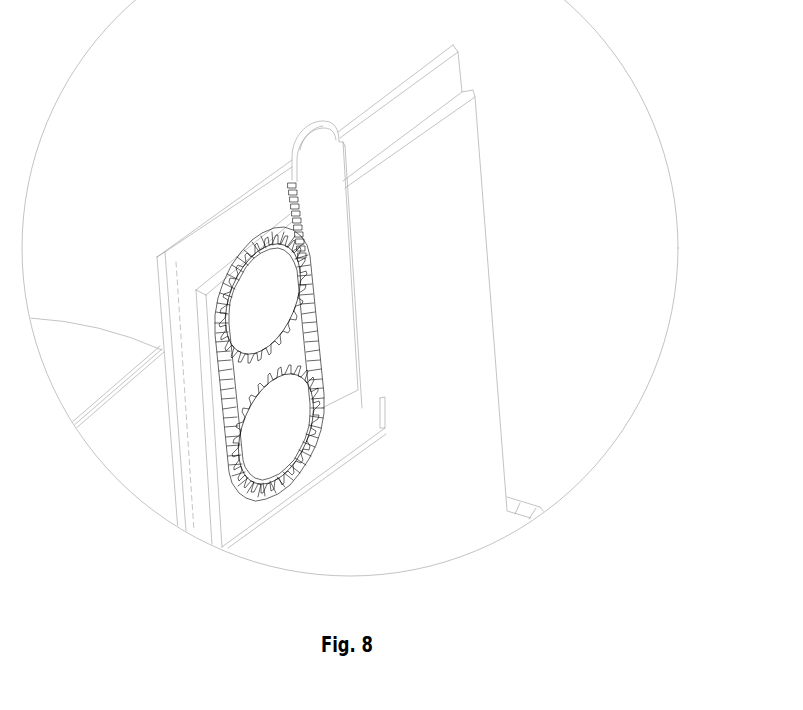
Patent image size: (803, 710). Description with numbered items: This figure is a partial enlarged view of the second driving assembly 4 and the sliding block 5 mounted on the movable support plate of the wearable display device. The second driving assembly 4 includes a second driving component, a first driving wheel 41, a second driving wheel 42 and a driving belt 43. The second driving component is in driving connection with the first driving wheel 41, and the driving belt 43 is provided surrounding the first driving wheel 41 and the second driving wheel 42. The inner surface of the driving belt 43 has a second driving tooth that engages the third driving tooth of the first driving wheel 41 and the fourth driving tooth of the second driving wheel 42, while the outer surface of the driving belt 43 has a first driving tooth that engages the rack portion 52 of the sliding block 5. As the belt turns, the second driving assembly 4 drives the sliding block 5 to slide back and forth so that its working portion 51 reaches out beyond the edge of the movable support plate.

The second driving assembly 4 is at (247, 357).
The first driving wheel 41 is at (243, 319).
The second driving wheel 42 is at (283, 442).
The driving belt 43 is at (232, 400).
The sliding block 5 is at (311, 253).
The working portion 51 is at (315, 130).
The rack portion 52 is at (297, 220).